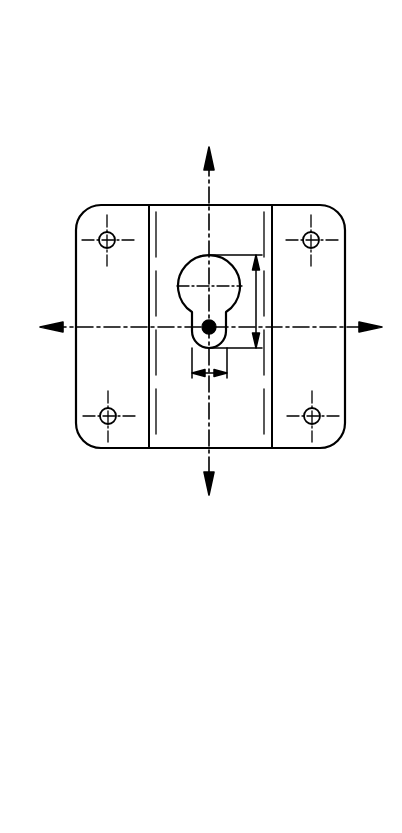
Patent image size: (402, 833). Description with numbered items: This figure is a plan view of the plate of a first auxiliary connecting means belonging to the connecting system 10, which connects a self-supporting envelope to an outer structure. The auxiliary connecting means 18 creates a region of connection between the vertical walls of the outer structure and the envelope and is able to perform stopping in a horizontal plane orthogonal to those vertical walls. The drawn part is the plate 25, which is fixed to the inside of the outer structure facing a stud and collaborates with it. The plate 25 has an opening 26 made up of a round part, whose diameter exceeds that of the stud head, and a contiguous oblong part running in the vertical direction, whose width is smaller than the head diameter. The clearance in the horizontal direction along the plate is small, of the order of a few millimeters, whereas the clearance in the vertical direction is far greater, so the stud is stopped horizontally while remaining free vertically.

The connecting system 10 is at (219, 108).
The auxiliary connecting means 18 is at (78, 203).
The plate 25 is at (293, 440).
The opening 26 is at (198, 275).